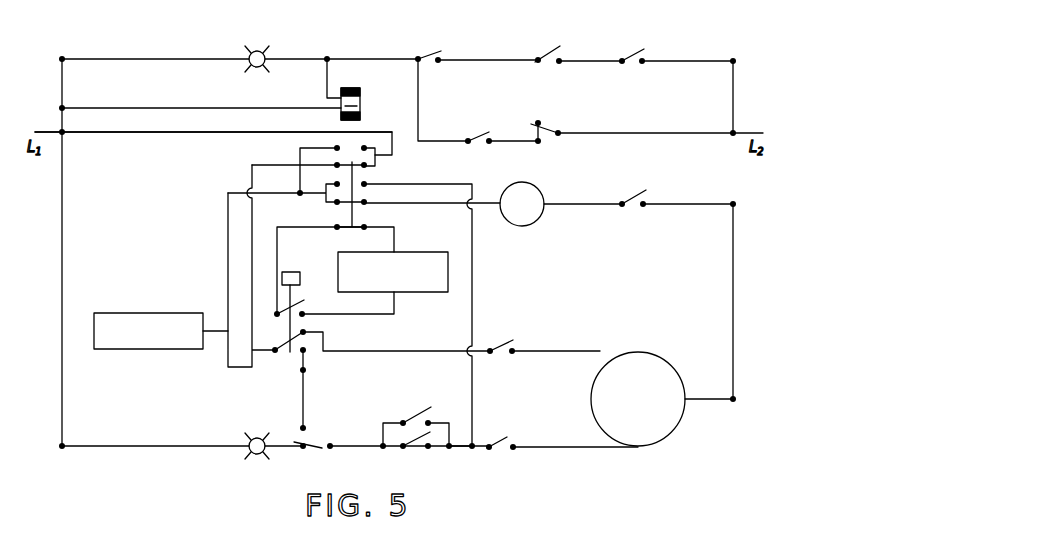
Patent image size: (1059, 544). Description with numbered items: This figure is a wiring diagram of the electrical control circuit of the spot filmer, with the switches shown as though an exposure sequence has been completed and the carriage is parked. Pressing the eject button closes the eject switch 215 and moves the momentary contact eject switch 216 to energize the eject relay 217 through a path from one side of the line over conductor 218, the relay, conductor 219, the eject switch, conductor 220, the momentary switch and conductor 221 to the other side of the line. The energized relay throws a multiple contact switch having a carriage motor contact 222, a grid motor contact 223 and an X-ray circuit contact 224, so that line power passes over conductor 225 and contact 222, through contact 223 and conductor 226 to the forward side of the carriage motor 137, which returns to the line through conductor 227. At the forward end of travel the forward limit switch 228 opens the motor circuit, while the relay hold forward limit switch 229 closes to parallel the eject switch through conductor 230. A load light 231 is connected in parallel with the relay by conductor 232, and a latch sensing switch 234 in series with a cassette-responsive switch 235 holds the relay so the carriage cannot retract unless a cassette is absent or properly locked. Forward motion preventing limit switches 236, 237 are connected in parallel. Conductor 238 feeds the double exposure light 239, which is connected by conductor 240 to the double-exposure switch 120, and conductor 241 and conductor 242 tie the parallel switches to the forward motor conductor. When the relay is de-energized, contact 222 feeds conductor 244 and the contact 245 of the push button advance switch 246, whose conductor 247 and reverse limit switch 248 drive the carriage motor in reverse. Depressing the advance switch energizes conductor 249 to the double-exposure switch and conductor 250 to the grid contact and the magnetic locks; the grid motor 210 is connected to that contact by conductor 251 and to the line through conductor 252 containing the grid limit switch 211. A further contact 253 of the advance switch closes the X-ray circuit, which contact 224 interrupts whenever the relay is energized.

The double-exposure switch 120 is at (314, 451).
The carriage motor 137 is at (665, 364).
The grid motor 210 is at (538, 188).
The limit switch 211 is at (625, 193).
The eject switch 215 is at (475, 130).
The momentary contact eject switch 216 is at (553, 124).
The eject relay 217 is at (361, 104).
The conductor 218 is at (138, 108).
The conductor 219 is at (416, 78).
The conductor 220 is at (507, 140).
The conductor 221 is at (653, 132).
The carriage motor contact 222 is at (363, 168).
The grid motor contact 223 is at (365, 195).
The X-ray circuit contact 224 is at (362, 224).
The conductor 225 is at (125, 132).
The conductor 226 is at (473, 288).
The conductor 227 is at (733, 277).
The forward limit switch 228 is at (501, 446).
The relay hold forward limit switch 229 is at (426, 50).
The conductor 230 is at (512, 57).
The load light 231 is at (272, 52).
The conductor 232 is at (150, 59).
The latch sensing switch 234 is at (548, 54).
The cassette-responsive switch 235 is at (636, 55).
The forward motion preventing limit switch 236 is at (420, 417).
The forward motion preventing limit switch 237 is at (412, 452).
The conductor 238 is at (63, 393).
The double exposure light 239 is at (250, 440).
The conductor 240 is at (281, 441).
The conductor 241 is at (342, 444).
The conductor 242 is at (463, 451).
The conductor 244 is at (270, 163).
The contact 245 is at (297, 347).
The push button advance switch 246 is at (289, 271).
The conductor 247 is at (380, 351).
The reverse limit switch 248 is at (497, 343).
The conductor 249 is at (306, 368).
The conductor 250 is at (227, 243).
The conductor 251 is at (458, 205).
The conductor 252 is at (680, 203).
The contact 253 is at (300, 306).